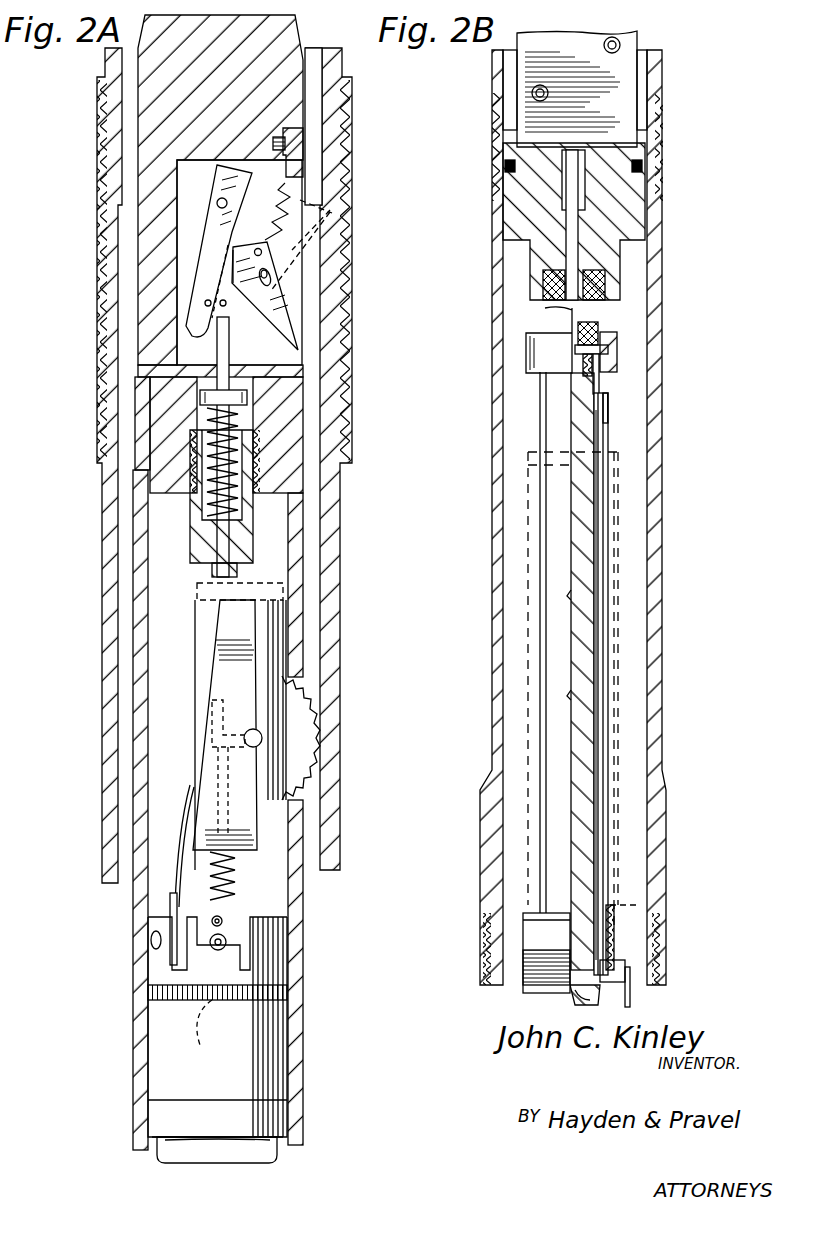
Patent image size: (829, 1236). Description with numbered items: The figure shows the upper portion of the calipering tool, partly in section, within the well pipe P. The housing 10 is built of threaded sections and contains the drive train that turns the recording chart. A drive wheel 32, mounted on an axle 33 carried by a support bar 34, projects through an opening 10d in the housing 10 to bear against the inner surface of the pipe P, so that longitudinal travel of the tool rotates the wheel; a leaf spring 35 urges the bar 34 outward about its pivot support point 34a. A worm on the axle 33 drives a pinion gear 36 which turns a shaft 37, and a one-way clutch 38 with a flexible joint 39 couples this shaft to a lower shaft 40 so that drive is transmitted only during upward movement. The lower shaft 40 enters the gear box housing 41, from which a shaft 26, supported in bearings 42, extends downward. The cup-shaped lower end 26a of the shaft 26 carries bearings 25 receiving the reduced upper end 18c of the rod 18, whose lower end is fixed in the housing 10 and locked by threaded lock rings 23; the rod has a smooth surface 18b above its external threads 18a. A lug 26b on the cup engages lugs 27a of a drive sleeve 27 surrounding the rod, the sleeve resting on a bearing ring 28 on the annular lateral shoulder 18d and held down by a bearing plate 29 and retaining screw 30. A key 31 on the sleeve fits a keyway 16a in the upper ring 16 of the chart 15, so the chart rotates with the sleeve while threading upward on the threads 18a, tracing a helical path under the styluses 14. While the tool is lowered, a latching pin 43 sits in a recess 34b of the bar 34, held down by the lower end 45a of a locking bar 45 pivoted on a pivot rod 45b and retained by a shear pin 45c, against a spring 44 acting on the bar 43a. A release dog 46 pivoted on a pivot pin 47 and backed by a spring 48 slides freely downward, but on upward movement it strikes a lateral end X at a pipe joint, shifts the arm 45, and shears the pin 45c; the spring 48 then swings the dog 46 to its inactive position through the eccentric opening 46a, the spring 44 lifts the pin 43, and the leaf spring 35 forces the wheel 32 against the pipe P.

In FIG. 2A, the housing 10 is at (305, 1050).
In FIG. 2B, the housing 10 is at (650, 548).
In FIG. 2A, the opening 10d is at (305, 690).
In FIG. 2B, the stylus 14 is at (615, 936).
In FIG. 2B, the chart 15 is at (622, 596).
In FIG. 2B, the upper ring 16 is at (622, 453).
In FIG. 2B, the keyway 16a is at (642, 905).
In FIG. 2B, the rod 18 is at (601, 651).
In FIG. 2B, the external threads 18a is at (632, 996).
In FIG. 2B, the smooth surface 18b is at (592, 722).
In FIG. 2B, the upper end 18c is at (600, 321).
In FIG. 2B, the annular lateral shoulder 18d is at (560, 986).
In FIG. 2B, the threaded lock rings 23 is at (650, 960).
In FIG. 2B, the bearings 25 is at (600, 306).
In FIG. 2B, the shaft 26 is at (585, 225).
In FIG. 2B, the cup-shaped lower end 26a is at (620, 300).
In FIG. 2B, the lug 26b is at (600, 332).
In FIG. 2B, the drive sleeve 27 is at (595, 521).
In FIG. 2B, the lugs 27a is at (617, 352).
In FIG. 2B, the bearing ring 28 is at (546, 953).
In FIG. 2B, the bearing plate 29 is at (590, 370).
In FIG. 2B, the retaining screw 30 is at (597, 385).
In FIG. 2B, the key 31 is at (606, 415).
In FIG. 2A, the drive wheel 32 is at (305, 740).
In FIG. 2A, the axle 33 is at (252, 729).
In FIG. 2A, the support bar 34 is at (219, 716).
In FIG. 2A, the pivot support point 34a is at (228, 942).
In FIG. 2A, the recess 34b is at (232, 584).
In FIG. 2A, the leaf spring 35 is at (170, 893).
In FIG. 2A, the pinion gear 36 is at (218, 700).
In FIG. 2A, the shaft 37 is at (190, 800).
In FIG. 2A, the one-way clutch 38 is at (236, 881).
In FIG. 2A, the flexible joint 39 is at (224, 925).
In FIG. 2A, the lower shaft 40 is at (205, 1030).
In FIG. 2A, the gear box housing 41 is at (285, 1025).
In FIG. 2B, the gear box housing 41 is at (620, 65).
In FIG. 2B, the bearings 42 is at (605, 282).
In FIG. 2A, the latching pin 43 is at (240, 530).
In FIG. 2A, the bar 43a is at (248, 397).
In FIG. 2A, the spring 44 is at (240, 419).
In FIG. 2A, the locking bar 45 is at (162, 261).
In FIG. 2A, the lower end 45a is at (190, 332).
In FIG. 2A, the pivot rod 45b is at (217, 204).
In FIG. 2A, the shear pin 45c is at (225, 306).
In FIG. 2A, the release dog 46 is at (332, 280).
In FIG. 2A, the eccentric opening 46a is at (262, 272).
In FIG. 2A, the pivot pin 47 is at (270, 278).
In FIG. 2A, the spring 48 is at (278, 205).
In FIG. 2A, the pipe P is at (338, 545).
In FIG. 2A, the lateral end X is at (350, 213).